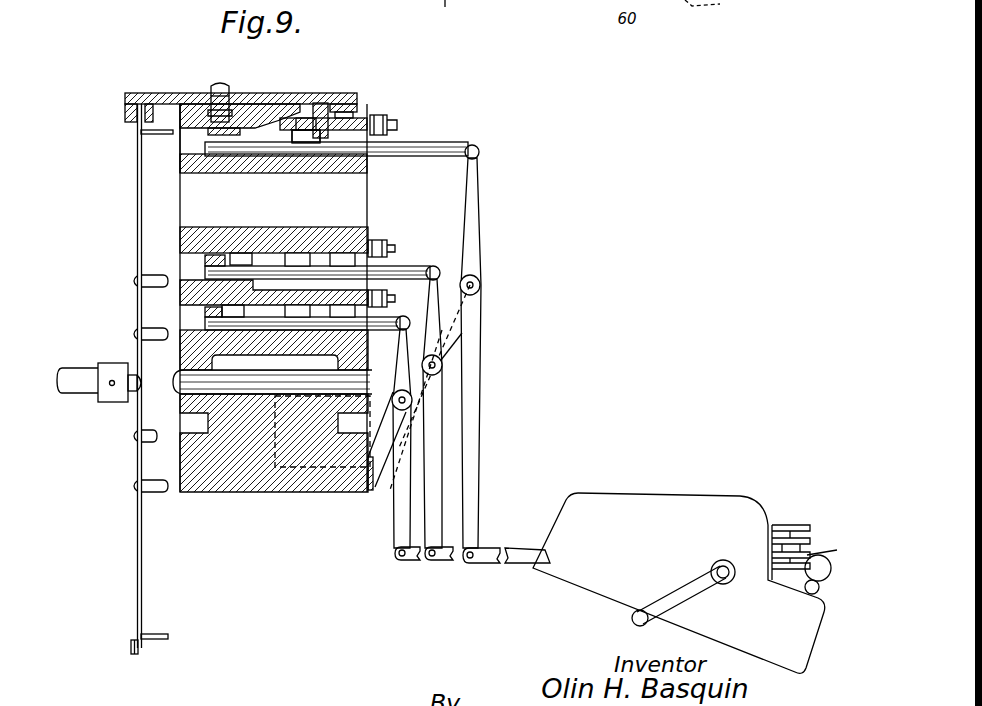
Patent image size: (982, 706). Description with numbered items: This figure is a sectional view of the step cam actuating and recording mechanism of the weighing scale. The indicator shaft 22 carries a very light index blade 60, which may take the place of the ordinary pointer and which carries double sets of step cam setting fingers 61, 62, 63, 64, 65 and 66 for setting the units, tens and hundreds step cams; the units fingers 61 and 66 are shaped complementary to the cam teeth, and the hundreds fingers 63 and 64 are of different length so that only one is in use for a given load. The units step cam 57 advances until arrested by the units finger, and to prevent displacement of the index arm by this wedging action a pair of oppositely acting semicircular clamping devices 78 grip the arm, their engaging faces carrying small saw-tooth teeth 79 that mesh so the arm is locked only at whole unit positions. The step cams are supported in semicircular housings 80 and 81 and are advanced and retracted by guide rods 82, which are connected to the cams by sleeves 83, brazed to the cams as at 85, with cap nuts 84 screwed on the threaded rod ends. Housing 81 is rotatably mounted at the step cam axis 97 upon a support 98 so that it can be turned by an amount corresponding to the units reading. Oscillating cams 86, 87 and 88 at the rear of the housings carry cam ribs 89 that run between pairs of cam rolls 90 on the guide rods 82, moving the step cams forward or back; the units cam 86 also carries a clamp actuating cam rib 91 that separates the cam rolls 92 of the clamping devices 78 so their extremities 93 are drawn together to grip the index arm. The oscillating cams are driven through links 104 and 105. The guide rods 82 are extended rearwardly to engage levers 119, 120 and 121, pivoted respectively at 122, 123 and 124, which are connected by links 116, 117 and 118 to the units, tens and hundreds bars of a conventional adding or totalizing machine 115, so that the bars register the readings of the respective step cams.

The indicator shaft 22 is at (76, 393).
The units step cam 57 is at (185, 150).
The index blade 60 is at (142, 514).
The units step cam setting finger 61 is at (162, 135).
The step cam setting finger 62 is at (155, 276).
The hundreds step cam setting finger 63 is at (155, 340).
The hundreds step cam setting finger 64 is at (152, 431).
The step cam setting finger 65 is at (160, 481).
The units step cam setting finger 66 is at (152, 634).
The clamping devices 78 is at (168, 93).
The teeth 79 is at (138, 122).
The housing 80 is at (368, 170).
The housing 81 is at (340, 240).
The guide rods 82 is at (265, 156).
The sleeves 83 is at (252, 128).
The cap nuts 84 is at (222, 140).
The brazed attachment 85 is at (228, 118).
The units cam 86 is at (362, 118).
The oscillating cam 87 is at (368, 196).
The oscillating cam 88 is at (370, 294).
The cam ribs 89 is at (315, 357).
The cam rolls 90 is at (303, 143).
The clamp actuating cam rib 91 is at (330, 104).
The cam rolls 92 is at (318, 100).
The extremities 93 is at (126, 112).
The axis 97 is at (255, 394).
The support 98 is at (292, 494).
The link 104 is at (388, 120).
The link 105 is at (393, 243).
The adding or totalizing machine 115 is at (659, 488).
The link 116 is at (522, 563).
The link 117 is at (447, 561).
The link 118 is at (412, 562).
The lever 119 is at (482, 262).
The lever 120 is at (436, 266).
The lever 121 is at (398, 352).
The pivot 122 is at (481, 285).
The pivot 123 is at (442, 370).
The pivot 124 is at (412, 400).